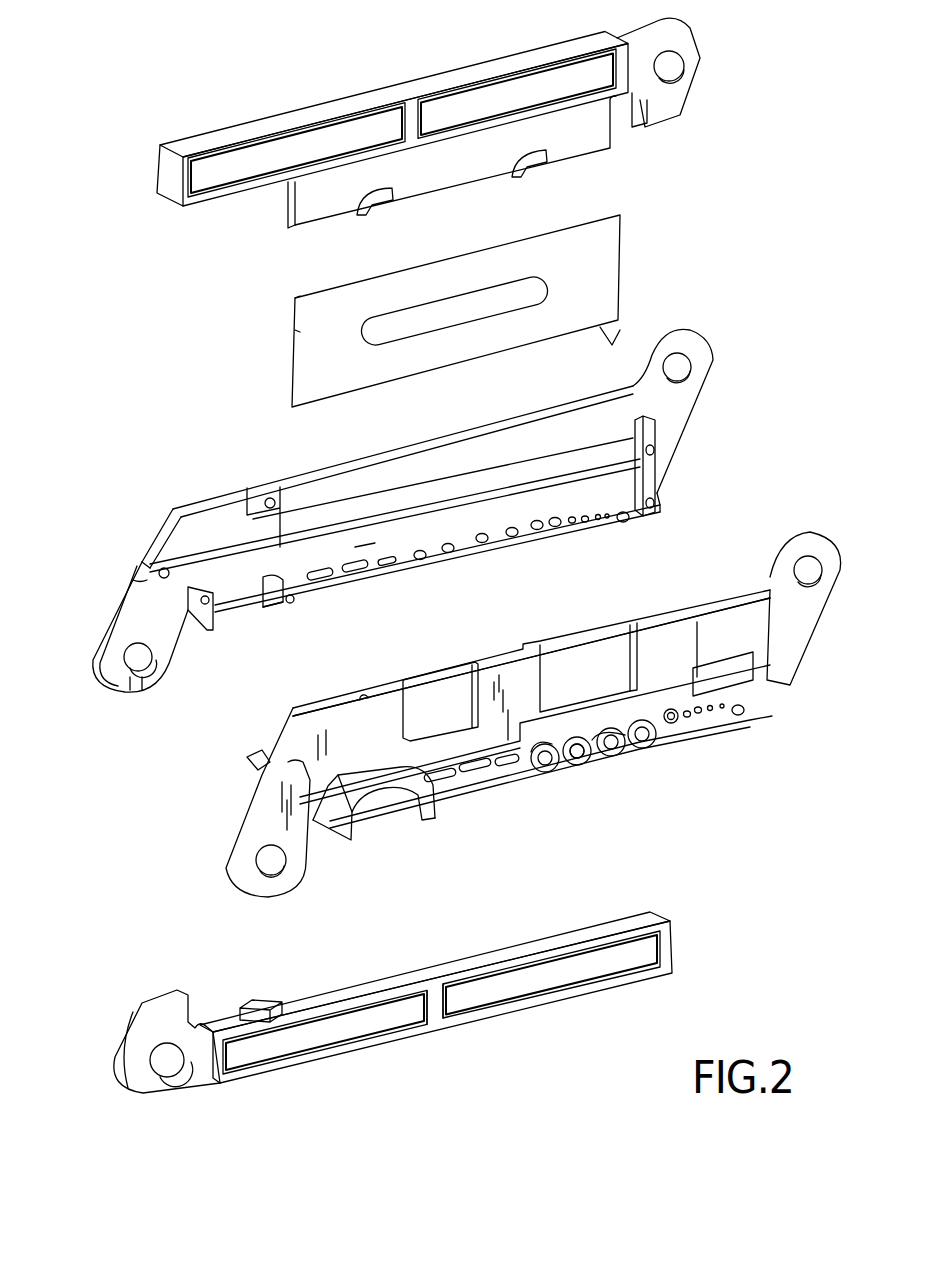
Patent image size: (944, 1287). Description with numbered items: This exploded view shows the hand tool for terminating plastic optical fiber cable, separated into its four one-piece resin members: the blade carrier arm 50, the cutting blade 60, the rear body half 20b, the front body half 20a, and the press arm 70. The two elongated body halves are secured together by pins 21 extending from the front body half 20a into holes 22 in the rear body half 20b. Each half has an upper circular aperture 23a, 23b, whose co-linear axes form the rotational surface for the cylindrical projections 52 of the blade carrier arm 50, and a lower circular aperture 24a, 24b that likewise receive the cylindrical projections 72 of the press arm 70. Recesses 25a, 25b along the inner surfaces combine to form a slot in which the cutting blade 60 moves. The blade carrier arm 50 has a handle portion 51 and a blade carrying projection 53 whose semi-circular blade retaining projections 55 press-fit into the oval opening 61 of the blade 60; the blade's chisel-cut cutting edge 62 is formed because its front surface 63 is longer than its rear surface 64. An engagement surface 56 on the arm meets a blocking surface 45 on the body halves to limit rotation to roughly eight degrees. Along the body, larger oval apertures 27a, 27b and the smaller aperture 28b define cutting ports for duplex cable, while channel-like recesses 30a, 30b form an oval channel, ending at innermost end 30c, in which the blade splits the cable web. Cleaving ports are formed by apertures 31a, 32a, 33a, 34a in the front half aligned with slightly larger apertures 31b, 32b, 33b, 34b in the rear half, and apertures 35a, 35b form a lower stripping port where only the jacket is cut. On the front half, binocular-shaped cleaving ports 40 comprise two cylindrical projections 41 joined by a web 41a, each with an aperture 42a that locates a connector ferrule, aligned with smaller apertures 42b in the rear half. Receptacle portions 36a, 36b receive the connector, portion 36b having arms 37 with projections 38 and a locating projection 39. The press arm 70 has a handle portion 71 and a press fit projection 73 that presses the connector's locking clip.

The blade carrier arm 50 is at (430, 72).
The handle portion 51 is at (290, 118).
The cylindrical projections 52 is at (680, 66).
The blade carrying projection 53 is at (583, 133).
The blade retaining projections 55 is at (385, 200).
The engagement surface 56 is at (637, 125).
The cutting blade 60 is at (600, 248).
The oval opening 61 is at (508, 288).
The cutting edge 62 is at (620, 325).
The front surface 63 is at (312, 330).
The rear surface 64 is at (294, 302).
The rear body half 20b is at (700, 410).
The upper circular aperture 23b is at (680, 370).
The recess 25b is at (300, 485).
The blocking surface 45 is at (660, 425).
The holes 22 is at (655, 452).
The projections 38 is at (168, 512).
The locating projection 39 is at (265, 592).
The channel-like recess 30b is at (132, 585).
The lower circular aperture 24b is at (143, 668).
The receptacle portion 36b is at (216, 612).
The arms 37 is at (270, 600).
The rear oval-shaped aperture 27b is at (355, 558).
The rear aperture of smaller cutting port 28b is at (390, 556).
The apertures 42b is at (448, 554).
The aperture 31b is at (555, 516).
The aperture 32b is at (585, 515).
The aperture 33b is at (598, 512).
The aperture 34b is at (608, 520).
The aperture 35b is at (627, 520).
The innermost end 30c is at (368, 545).
The front body half 20a is at (760, 668).
The upper circular aperture 23a is at (815, 572).
The recess 25a is at (730, 610).
The cylindrical projections 41 is at (540, 722).
The web 41a is at (548, 736).
The aperture 32a is at (698, 707).
The aperture 33a is at (710, 712).
The aperture 34a is at (722, 710).
The aperture 35a is at (744, 712).
The aperture 31a is at (671, 724).
The cleaving ports 40 is at (560, 772).
The aperture 42a is at (585, 765).
The front oval-shaped aperture 27a is at (475, 772).
The receptacle portion 36a is at (370, 820).
The channel-like recess 30a is at (258, 780).
The lower circular aperture 24a is at (273, 870).
The pins 21 is at (255, 755).
The press arm 70 is at (345, 1050).
The handle portion 71 is at (540, 1012).
The cylindrical projections 72 is at (168, 1060).
The press fit projection 73 is at (268, 1020).